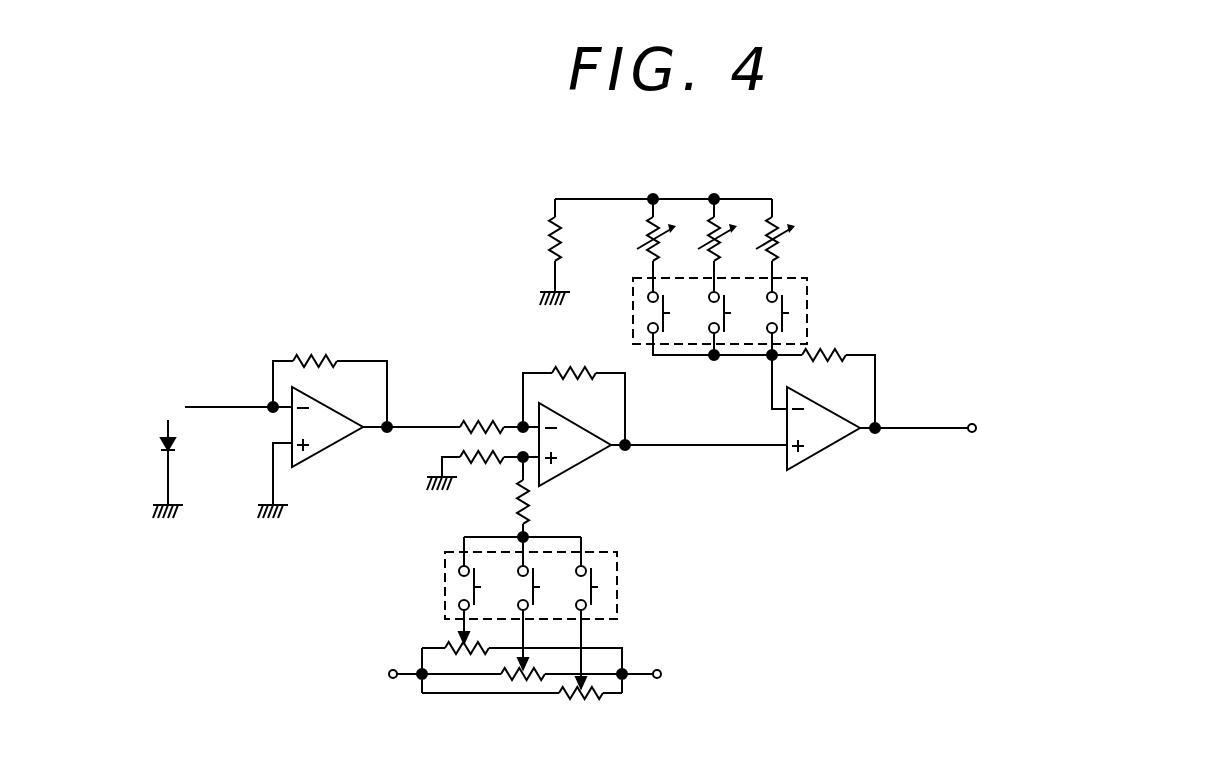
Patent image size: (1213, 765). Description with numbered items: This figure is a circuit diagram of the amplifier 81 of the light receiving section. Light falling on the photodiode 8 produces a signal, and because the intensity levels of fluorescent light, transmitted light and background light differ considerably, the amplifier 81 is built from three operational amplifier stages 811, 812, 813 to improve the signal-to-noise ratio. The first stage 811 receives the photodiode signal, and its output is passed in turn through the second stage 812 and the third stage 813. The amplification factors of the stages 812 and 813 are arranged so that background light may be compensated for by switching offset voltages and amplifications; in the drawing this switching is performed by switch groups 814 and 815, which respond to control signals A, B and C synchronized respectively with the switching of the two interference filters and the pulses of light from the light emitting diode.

The photodiode 8 is at (157, 449).
The amplifier 81 is at (426, 244).
The first operational amplifier stage 811 is at (320, 452).
The second operational amplifier stage 812 is at (590, 462).
The third operational amplifier stage 813 is at (837, 445).
The offset selection switch 814 is at (445, 584).
The gain selection switch 815 is at (807, 290).